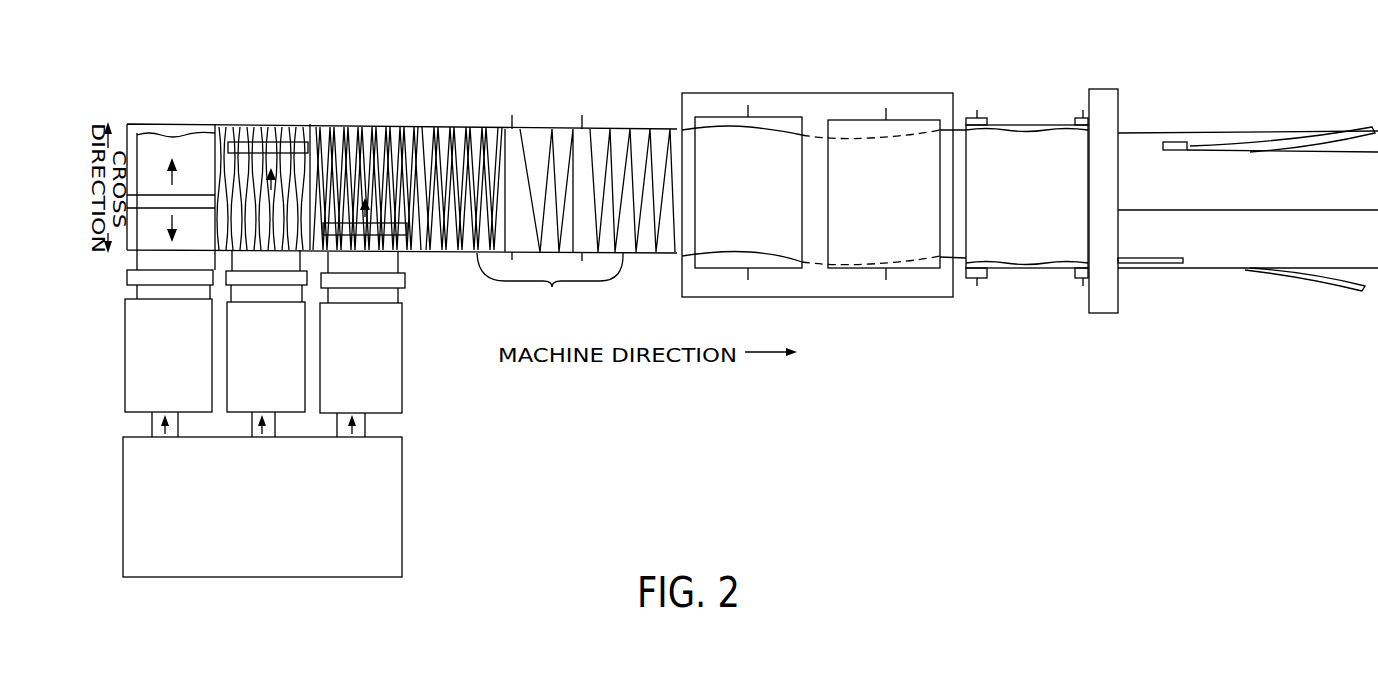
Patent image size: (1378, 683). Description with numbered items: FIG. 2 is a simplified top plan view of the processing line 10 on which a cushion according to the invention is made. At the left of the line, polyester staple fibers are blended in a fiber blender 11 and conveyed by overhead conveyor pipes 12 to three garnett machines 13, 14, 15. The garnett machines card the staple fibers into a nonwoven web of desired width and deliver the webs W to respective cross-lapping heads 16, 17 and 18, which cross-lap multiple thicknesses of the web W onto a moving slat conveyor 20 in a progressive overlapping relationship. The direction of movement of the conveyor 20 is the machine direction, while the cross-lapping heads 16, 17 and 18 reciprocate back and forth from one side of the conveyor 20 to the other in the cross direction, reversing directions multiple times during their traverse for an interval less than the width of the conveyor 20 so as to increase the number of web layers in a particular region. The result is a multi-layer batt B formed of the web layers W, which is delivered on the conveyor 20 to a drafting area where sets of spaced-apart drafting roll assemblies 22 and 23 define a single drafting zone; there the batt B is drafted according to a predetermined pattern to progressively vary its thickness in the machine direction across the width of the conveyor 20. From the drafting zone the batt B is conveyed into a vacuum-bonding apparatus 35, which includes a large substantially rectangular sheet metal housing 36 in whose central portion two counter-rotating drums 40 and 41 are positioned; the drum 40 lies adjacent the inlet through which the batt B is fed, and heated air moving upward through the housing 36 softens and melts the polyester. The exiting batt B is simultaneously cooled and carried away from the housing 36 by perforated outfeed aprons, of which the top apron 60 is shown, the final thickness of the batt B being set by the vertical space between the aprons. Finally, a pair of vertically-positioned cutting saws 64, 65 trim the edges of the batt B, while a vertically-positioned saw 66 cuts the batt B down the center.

The processing line 10 is at (628, 414).
The fiber blender 11 is at (370, 550).
The overhead conveyor pipes 12 is at (177, 423).
The garnett machine 13 is at (178, 380).
The garnett machine 14 is at (274, 380).
The garnett machine 15 is at (371, 382).
The cross-lapping head 16 is at (150, 202).
The cross-lapping head 17 is at (260, 145).
The cross-lapping head 18 is at (328, 228).
The slat conveyor 20 is at (470, 128).
The drafting roll assembly 22 is at (513, 147).
The drafting roll assembly 23 is at (582, 148).
The vacuum-bonding apparatus 35 is at (806, 82).
The sheet metal housing 36 is at (923, 107).
The drum 40 is at (712, 258).
The drum 41 is at (923, 268).
The top perforated outfeed apron 60 is at (1005, 163).
The cutting saw 64 is at (1197, 158).
The cutting saw 65 is at (1195, 268).
The saw 66 is at (1187, 210).
The web W is at (197, 148).
The batt B is at (550, 284).